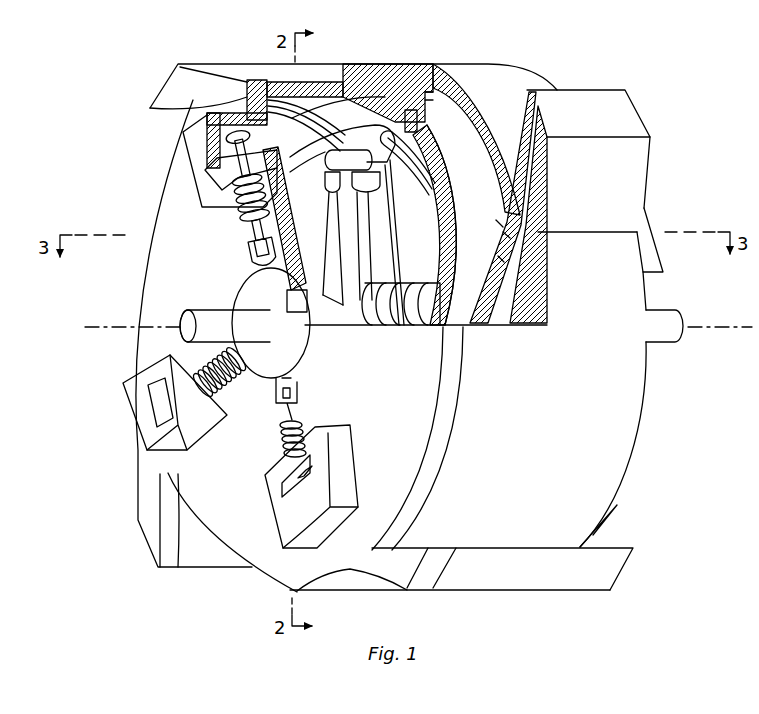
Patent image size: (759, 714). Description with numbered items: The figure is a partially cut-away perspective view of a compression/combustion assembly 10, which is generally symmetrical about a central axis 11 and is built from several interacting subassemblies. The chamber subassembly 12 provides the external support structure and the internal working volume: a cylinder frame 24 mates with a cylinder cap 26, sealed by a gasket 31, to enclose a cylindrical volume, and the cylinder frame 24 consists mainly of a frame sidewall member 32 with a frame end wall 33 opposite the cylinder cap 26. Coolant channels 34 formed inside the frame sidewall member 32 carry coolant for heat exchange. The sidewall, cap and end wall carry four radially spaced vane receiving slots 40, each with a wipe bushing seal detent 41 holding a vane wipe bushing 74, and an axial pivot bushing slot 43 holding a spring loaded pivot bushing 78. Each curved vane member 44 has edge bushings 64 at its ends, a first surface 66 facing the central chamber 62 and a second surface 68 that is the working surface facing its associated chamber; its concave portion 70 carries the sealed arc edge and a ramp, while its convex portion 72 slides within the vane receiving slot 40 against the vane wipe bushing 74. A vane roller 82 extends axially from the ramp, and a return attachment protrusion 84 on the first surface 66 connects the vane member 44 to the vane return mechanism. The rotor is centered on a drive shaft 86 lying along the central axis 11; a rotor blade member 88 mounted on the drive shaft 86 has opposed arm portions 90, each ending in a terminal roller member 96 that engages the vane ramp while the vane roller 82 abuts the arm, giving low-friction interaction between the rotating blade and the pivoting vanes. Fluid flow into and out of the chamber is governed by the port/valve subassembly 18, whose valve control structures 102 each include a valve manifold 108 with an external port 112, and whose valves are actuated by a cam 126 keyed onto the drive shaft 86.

The compression/combustion assembly 10 is at (141, 167).
The central axis 11 is at (133, 324).
The chamber subassembly 12 is at (437, 60).
The port/valve subassembly 18 is at (116, 404).
The cylinder frame 24 is at (630, 391).
The cylinder cap 26 is at (375, 389).
The gasket 31 is at (262, 82).
The frame sidewall member 32 is at (520, 445).
The frame end wall 33 is at (430, 252).
The coolant channels 34 is at (462, 128).
The vane receiving slot 40 is at (531, 160).
The wipe bushing seal detent 41 is at (496, 221).
The axial pivot bushing slot 43 is at (404, 108).
The vane member 44 is at (443, 224).
The central chamber 62 is at (376, 275).
The edge bushings 64 is at (295, 120).
The first surface 66 is at (356, 131).
The second surface 68 is at (486, 291).
The concave portion 70 is at (432, 194).
The convex portion 72 is at (499, 257).
The vane wipe bushing 74 is at (504, 236).
The spring loaded pivot bushing 78 is at (425, 126).
The vane roller 82 is at (328, 163).
The return attachment protrusion 84 is at (403, 160).
The drive shaft 86 is at (219, 307).
The rotor blade member 88 is at (357, 297).
The arm portions 90 is at (330, 291).
The terminal roller member 96 is at (364, 194).
The valve control structure 102 is at (268, 497).
The valve manifold 108 is at (308, 529).
The external port 112 is at (311, 466).
The cam 126 is at (271, 323).